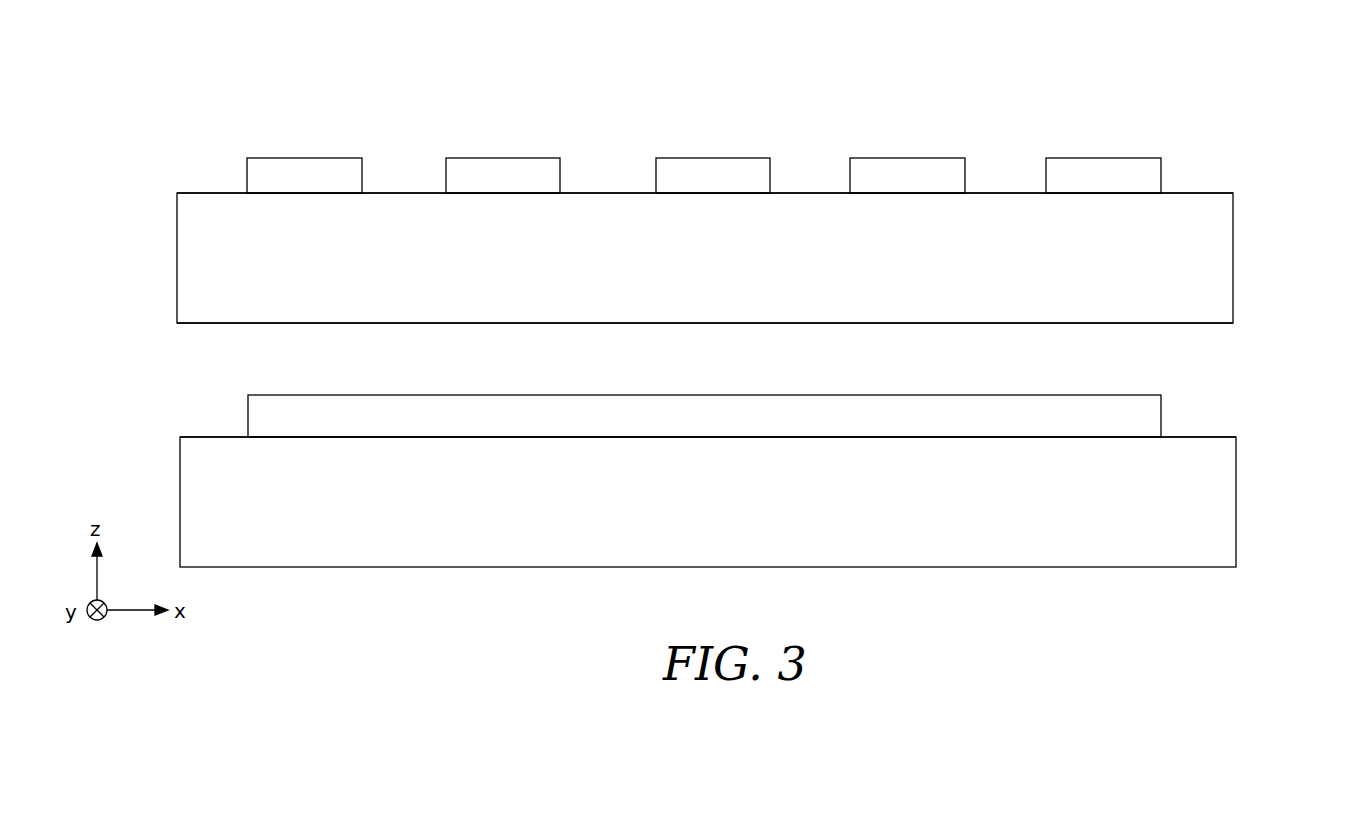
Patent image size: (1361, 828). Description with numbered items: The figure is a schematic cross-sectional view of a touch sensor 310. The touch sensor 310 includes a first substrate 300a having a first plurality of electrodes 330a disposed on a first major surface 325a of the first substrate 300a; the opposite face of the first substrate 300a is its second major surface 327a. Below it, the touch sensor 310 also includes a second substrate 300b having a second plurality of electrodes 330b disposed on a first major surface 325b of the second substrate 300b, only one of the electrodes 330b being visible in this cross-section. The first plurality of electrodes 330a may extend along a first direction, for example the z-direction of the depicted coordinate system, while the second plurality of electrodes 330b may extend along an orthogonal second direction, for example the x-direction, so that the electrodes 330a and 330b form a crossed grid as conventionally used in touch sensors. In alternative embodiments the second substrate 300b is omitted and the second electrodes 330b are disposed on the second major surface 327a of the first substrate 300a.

The touch sensor 310 is at (193, 97).
The first substrate 300a is at (1207, 262).
The first major surface of the first substrate 325a is at (1200, 192).
The second major surface of the first substrate 327a is at (217, 325).
The first plurality of electrodes 330a is at (297, 170).
The second substrate 300b is at (1207, 522).
The first major surface of the second substrate 325b is at (217, 436).
The second plurality of electrodes 330b is at (1147, 415).